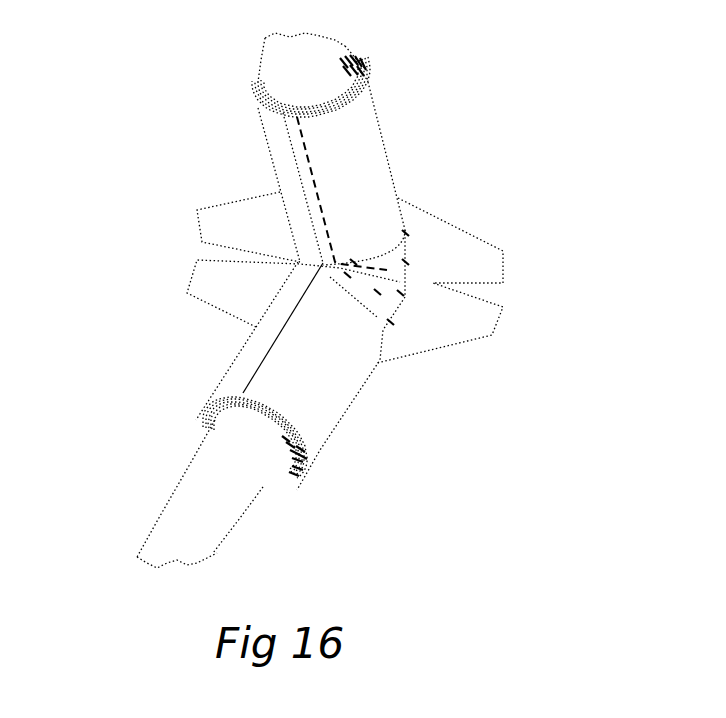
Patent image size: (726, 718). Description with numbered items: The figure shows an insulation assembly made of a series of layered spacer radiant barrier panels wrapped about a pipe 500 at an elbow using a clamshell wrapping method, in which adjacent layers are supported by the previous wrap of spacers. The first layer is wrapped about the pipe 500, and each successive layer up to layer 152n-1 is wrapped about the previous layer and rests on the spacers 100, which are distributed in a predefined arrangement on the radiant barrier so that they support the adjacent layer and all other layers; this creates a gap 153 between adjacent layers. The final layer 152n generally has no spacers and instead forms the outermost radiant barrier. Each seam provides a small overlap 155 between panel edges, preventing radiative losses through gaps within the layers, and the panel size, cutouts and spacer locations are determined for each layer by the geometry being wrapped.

The pipe 500 is at (306, 60).
The spacer 100 is at (270, 102).
The gap 153 is at (343, 75).
The overlap 155 is at (305, 175).
The outermost layer 152n is at (358, 133).
The layer 152n-1 is at (390, 302).